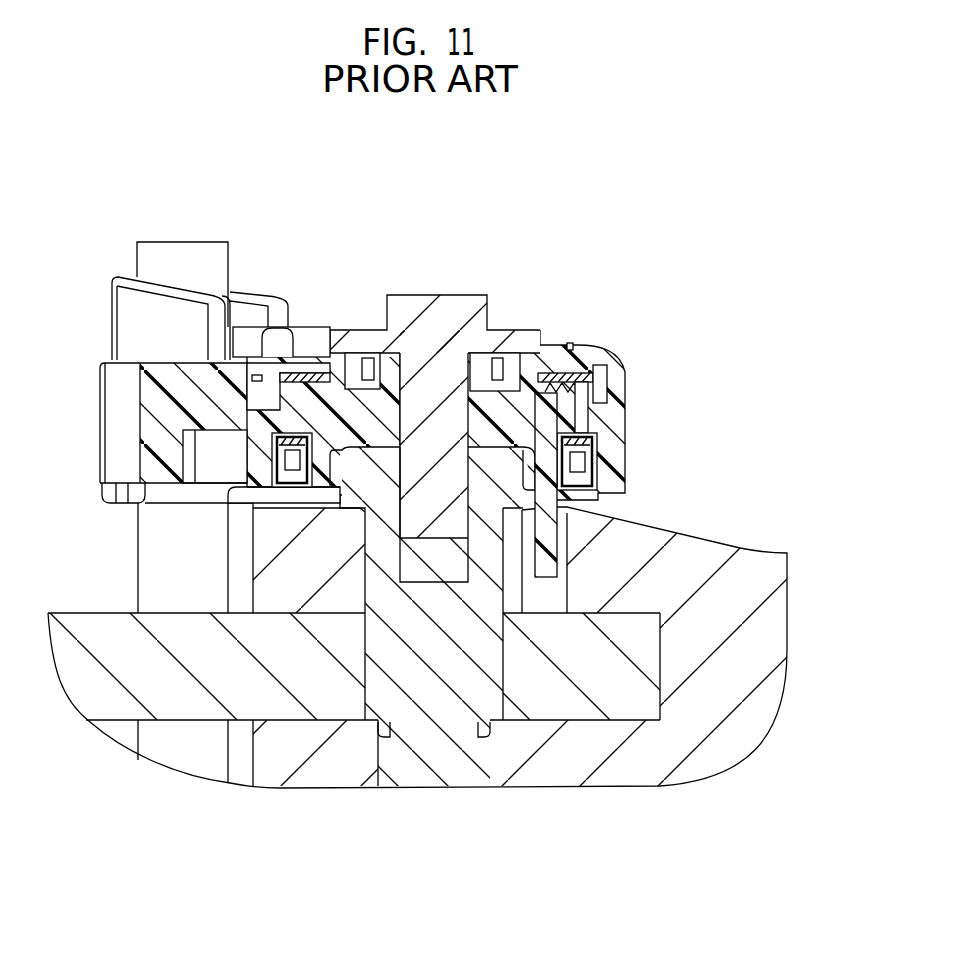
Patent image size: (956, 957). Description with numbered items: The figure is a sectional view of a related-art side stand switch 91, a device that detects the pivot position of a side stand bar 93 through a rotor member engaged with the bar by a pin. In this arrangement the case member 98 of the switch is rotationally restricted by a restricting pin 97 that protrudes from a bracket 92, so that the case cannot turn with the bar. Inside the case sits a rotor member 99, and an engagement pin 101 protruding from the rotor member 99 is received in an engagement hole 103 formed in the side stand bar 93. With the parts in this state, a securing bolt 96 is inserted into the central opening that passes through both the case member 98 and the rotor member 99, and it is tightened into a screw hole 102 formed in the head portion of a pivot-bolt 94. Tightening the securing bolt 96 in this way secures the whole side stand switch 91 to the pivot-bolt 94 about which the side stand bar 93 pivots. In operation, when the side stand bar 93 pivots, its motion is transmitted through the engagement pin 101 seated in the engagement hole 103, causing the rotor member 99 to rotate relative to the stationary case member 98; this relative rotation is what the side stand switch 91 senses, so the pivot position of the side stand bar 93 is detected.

The side stand switch 91 is at (608, 343).
The bracket 92 is at (85, 618).
The side stand bar 93 is at (693, 540).
The pivot-bolt 94 is at (505, 474).
The securing bolt 96 is at (462, 293).
The restricting pin 97 is at (148, 255).
The case member 98 is at (623, 358).
The rotor member 99 is at (572, 433).
The engagement pin 101 is at (548, 538).
The screw hole 102 is at (400, 520).
The engagement hole 103 is at (560, 598).